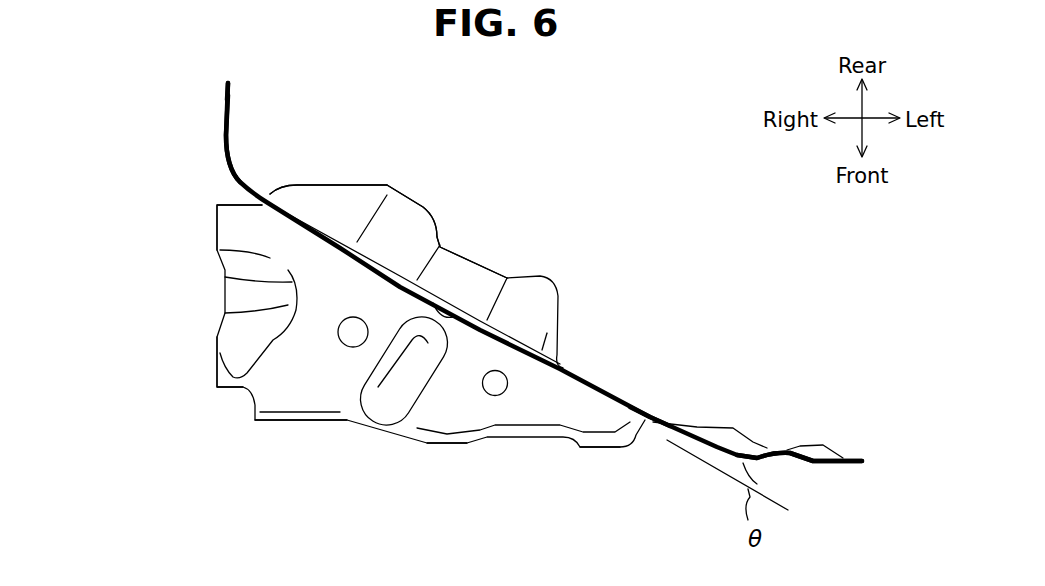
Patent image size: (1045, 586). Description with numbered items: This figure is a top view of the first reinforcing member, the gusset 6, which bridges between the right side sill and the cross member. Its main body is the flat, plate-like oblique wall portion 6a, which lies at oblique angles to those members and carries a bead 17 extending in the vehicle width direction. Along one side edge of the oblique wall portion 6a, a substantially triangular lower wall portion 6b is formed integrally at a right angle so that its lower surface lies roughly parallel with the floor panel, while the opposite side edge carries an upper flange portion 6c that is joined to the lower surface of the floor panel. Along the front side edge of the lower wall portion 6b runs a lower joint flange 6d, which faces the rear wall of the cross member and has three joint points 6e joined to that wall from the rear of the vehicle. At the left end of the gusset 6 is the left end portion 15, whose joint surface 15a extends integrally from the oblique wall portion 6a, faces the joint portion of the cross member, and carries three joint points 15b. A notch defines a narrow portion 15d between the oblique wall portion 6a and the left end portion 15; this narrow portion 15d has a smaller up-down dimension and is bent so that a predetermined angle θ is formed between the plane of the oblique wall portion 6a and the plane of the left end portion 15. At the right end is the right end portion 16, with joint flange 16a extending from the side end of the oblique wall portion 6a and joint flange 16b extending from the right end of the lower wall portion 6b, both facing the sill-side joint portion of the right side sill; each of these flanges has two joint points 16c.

The gusset 6 is at (535, 260).
The oblique wall portion 6a is at (330, 249).
The lower wall portion 6b is at (318, 381).
The upper flange portion 6c is at (415, 222).
The lower joint flange 6d is at (498, 446).
The joint points 6e is at (265, 423).
The left end portion 15 is at (856, 442).
The joint surface 15a is at (783, 458).
The joint points 15b is at (730, 427).
The narrow portion 15d is at (647, 452).
The right end portion 16 is at (107, 112).
The joint flange 16a is at (223, 117).
The joint flange 16b is at (225, 292).
The joint points 16c is at (227, 90).
The bead 17 is at (462, 313).